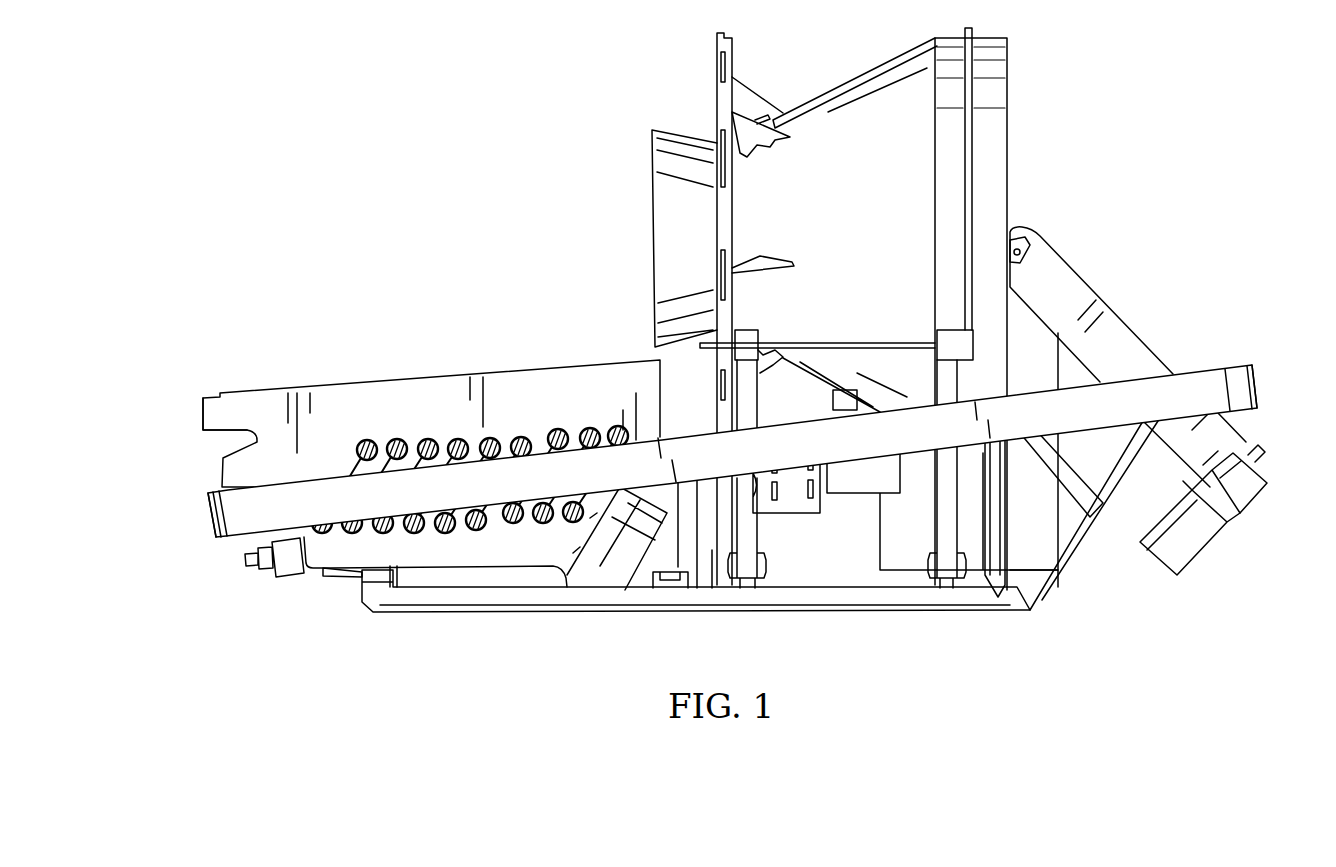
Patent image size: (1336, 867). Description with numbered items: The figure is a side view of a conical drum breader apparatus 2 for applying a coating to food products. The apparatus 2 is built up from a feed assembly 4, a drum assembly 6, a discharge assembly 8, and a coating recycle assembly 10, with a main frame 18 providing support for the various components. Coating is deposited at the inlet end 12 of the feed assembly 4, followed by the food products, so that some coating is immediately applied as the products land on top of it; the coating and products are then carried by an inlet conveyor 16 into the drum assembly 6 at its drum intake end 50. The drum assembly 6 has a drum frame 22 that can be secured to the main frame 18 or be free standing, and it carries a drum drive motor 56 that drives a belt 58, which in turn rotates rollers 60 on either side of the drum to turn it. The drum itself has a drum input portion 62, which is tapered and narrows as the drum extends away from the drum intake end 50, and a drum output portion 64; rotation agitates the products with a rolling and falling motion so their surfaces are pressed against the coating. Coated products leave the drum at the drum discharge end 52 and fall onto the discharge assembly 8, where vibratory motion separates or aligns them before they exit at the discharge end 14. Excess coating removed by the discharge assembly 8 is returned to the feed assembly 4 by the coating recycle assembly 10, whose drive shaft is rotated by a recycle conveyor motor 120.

The conical drum breader apparatus 2 is at (1190, 87).
The feed assembly 4 is at (1104, 284).
The drum assembly 6 is at (807, 68).
The discharge assembly 8 is at (382, 368).
The coating recycle assembly 10 is at (1259, 388).
The inlet end 12 is at (1219, 329).
The discharge end 14 is at (195, 397).
The inlet conveyor 16 is at (1144, 322).
The main frame 18 is at (783, 607).
The drum frame 22 is at (750, 533).
The drum intake end 50 is at (1023, 92).
The drum discharge end 52 is at (606, 168).
The drum drive motor 56 is at (850, 489).
The belt 58 is at (758, 398).
The rollers 60 is at (960, 347).
The drum input portion 62 is at (890, 67).
The drum output portion 64 is at (677, 138).
The recycle conveyor motor 120 is at (285, 570).